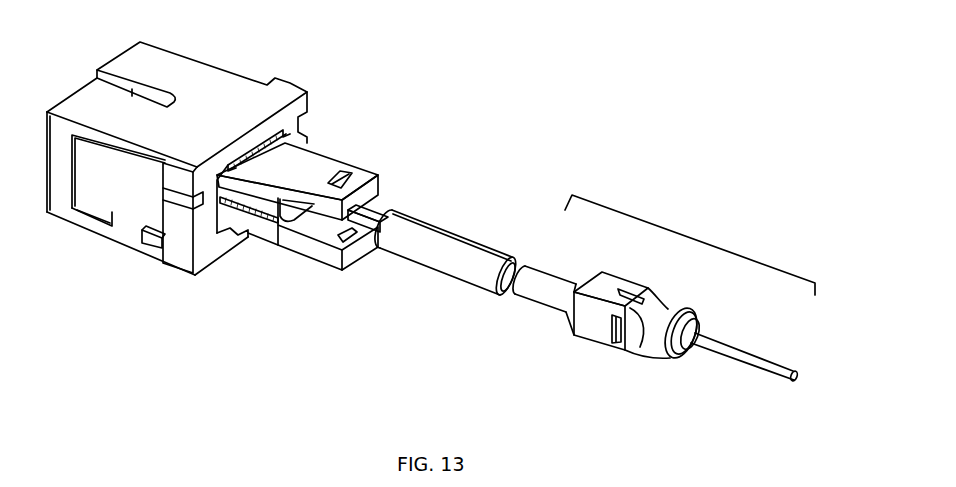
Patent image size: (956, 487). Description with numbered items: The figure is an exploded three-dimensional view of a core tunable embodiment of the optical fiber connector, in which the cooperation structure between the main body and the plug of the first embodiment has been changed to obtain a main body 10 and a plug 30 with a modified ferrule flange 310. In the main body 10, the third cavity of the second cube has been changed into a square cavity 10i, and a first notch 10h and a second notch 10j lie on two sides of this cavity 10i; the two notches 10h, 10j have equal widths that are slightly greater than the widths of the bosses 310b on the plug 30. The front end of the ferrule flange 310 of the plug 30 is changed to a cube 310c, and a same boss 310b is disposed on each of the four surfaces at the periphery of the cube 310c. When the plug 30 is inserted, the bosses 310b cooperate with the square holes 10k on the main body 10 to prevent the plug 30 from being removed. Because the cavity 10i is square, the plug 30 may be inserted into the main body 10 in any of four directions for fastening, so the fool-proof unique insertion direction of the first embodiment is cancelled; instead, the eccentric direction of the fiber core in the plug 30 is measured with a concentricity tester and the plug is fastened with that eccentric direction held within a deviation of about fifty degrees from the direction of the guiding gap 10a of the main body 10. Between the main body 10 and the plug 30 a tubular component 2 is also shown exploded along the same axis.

The main body 10 is at (278, 174).
The guiding gap 10a is at (133, 85).
The first notch 10h is at (300, 237).
The square cavity 10i is at (323, 227).
The second notch 10j is at (360, 212).
The square hole 10k is at (343, 177).
The tubular sleeve 2 is at (442, 247).
The plug 30 is at (695, 241).
The ferrule flange 310 is at (607, 287).
The boss 310b is at (618, 345).
The cube 310c is at (587, 317).